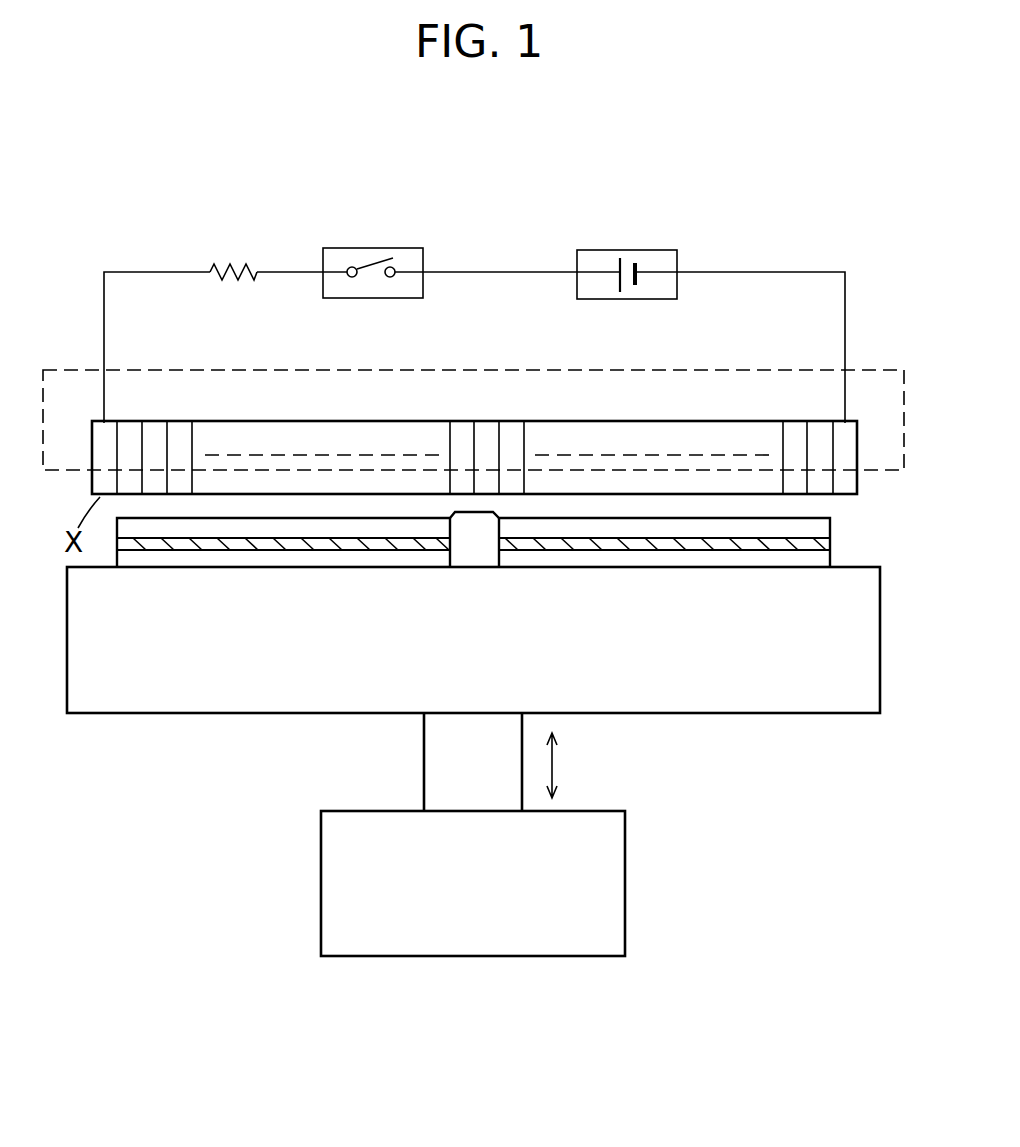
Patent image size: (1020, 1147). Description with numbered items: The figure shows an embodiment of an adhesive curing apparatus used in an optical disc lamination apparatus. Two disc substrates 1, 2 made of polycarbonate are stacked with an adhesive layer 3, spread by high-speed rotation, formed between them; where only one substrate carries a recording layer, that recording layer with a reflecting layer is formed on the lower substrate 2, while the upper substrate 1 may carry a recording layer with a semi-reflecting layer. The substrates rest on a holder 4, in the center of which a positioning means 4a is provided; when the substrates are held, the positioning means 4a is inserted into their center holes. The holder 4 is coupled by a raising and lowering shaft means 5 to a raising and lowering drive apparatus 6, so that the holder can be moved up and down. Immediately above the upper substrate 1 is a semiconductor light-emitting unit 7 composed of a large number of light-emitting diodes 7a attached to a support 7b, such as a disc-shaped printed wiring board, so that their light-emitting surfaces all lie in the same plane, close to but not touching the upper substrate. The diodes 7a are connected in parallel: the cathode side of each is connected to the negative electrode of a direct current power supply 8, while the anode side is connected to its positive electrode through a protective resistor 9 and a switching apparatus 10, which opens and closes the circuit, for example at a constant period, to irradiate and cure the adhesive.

The substrate 1 is at (820, 530).
The substrate 2 is at (820, 560).
The adhesive layer 3 is at (820, 546).
The holder 4 is at (473, 656).
The positioning means 4a is at (477, 544).
The raising and lowering shaft means 5 is at (440, 766).
The raising and lowering drive apparatus 6 is at (603, 916).
The semiconductor light-emitting unit 7 is at (473, 383).
The light-emitting diodes 7a is at (128, 432).
The support 7b is at (338, 390).
The direct current power supply 8 is at (655, 250).
The protective resistor 9 is at (240, 262).
The switching apparatus 10 is at (410, 248).